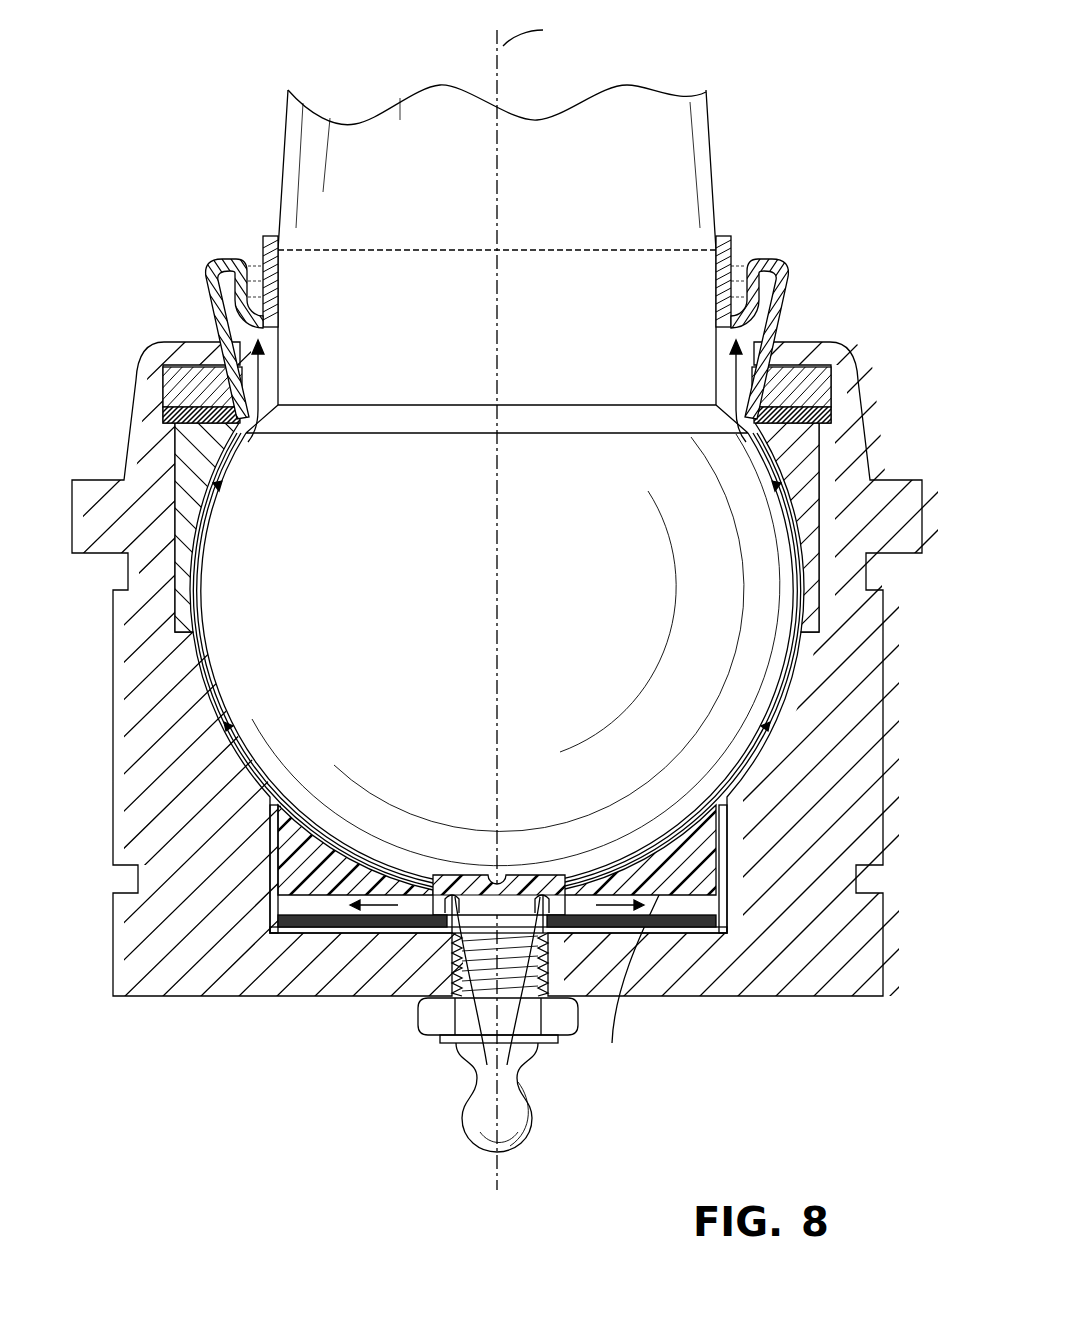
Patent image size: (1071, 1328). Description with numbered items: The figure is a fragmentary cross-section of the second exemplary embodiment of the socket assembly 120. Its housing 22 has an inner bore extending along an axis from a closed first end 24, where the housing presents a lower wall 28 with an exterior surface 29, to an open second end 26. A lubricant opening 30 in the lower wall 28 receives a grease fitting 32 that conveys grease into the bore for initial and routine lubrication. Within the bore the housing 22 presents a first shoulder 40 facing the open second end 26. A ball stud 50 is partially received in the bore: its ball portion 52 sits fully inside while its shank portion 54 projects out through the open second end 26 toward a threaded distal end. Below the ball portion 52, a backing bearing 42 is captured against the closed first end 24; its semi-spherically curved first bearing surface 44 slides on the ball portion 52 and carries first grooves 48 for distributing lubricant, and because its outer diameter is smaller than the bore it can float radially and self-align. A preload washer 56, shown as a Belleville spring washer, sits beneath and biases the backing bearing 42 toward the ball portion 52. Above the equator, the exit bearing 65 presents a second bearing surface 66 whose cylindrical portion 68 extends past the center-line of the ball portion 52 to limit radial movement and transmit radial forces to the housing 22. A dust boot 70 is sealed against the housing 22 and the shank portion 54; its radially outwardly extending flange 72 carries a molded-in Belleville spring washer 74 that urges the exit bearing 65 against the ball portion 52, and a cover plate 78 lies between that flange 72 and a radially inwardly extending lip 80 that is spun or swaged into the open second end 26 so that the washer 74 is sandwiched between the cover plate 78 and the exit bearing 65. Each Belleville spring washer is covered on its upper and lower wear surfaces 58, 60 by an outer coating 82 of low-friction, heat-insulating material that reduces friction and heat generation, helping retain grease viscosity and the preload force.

The housing 22 is at (113, 652).
The first end 24 is at (690, 935).
The second end 26 is at (800, 342).
The lower wall 28 is at (306, 977).
The exterior surface 29 is at (757, 997).
The lubricant opening 30 is at (470, 1006).
The grease fitting 32 is at (512, 1112).
The first shoulder 40 is at (178, 625).
The backing bearing 42 is at (698, 883).
The first bearing surface 44 is at (372, 878).
The first grooves 48 is at (428, 878).
The ball stud 50 is at (718, 140).
The ball portion 52 is at (592, 568).
The shank portion 54 is at (449, 218).
The preload washer 56 is at (308, 938).
The upper wear surface 58 is at (300, 905).
The lower wear surface 60 is at (387, 930).
The exit bearing 65 is at (828, 470).
The second bearing surface 66 is at (208, 482).
The cylindrical portion 68 is at (814, 590).
The dust boot 70 is at (790, 263).
The radially outwardly extending flange 72 is at (792, 410).
The Belleville spring washer 74 is at (182, 413).
The cover plate 78 is at (192, 392).
The radially inwardly extending lip 80 is at (176, 342).
The outer coating 82 is at (772, 397).
The socket assembly 120 is at (535, 604).